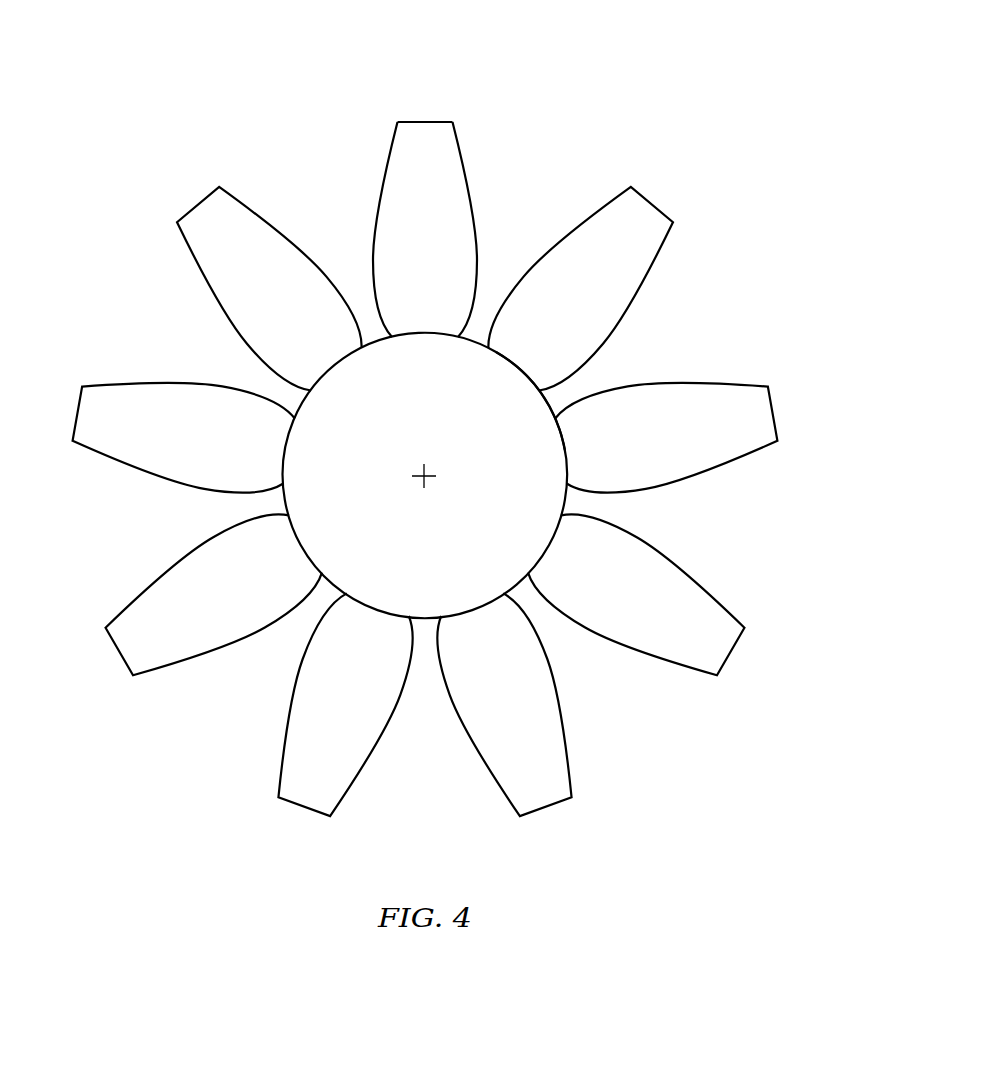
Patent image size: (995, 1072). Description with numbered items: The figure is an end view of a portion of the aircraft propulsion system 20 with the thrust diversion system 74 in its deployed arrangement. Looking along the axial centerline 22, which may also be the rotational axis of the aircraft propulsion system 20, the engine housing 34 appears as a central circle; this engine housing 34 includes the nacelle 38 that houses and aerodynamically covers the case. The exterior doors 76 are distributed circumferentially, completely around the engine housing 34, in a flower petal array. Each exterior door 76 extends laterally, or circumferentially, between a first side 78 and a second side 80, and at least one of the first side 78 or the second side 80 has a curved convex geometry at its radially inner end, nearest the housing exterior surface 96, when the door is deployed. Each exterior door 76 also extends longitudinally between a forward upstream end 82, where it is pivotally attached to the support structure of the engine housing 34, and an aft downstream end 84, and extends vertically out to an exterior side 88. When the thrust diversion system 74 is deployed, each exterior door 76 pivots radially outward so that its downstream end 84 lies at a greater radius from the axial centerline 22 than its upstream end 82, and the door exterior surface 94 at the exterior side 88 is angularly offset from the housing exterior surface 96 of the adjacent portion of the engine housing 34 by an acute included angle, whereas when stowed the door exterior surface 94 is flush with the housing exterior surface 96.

The aircraft propulsion system 20 is at (210, 80).
The axial centerline 22 is at (427, 480).
The engine housing 34 is at (558, 400).
The nacelle 38 is at (570, 500).
The thrust diversion system 74 is at (612, 140).
The exterior door 76 is at (472, 127).
The first side 78 is at (345, 191).
The second side 80 is at (503, 191).
The upstream end 82 is at (398, 341).
The downstream end 84 is at (424, 80).
The exterior side 88 is at (443, 223).
The door exterior surface 94 is at (443, 278).
The housing exterior surface 96 is at (474, 290).